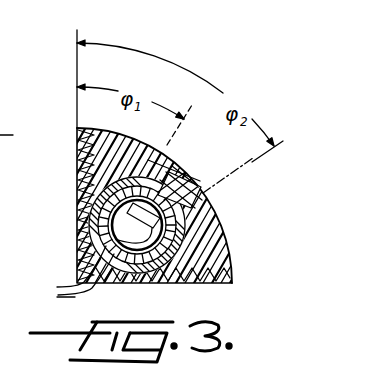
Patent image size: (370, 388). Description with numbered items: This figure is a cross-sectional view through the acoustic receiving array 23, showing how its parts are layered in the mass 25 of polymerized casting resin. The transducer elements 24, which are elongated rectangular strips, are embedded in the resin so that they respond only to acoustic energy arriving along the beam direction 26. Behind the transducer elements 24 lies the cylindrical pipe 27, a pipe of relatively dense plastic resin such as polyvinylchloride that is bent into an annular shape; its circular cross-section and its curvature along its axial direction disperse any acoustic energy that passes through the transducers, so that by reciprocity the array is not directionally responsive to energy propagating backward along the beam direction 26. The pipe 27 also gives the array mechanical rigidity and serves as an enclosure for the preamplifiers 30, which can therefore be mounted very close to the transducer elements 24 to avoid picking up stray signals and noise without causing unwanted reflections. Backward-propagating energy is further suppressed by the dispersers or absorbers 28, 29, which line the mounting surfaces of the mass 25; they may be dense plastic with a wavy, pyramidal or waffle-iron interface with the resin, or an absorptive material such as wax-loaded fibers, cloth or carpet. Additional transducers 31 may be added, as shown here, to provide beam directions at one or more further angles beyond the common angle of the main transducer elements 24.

The receiving array 23 is at (228, 208).
The transducer elements 24 is at (172, 160).
The mass of casting resin 25 is at (208, 251).
The beam direction 26 is at (190, 98).
The cylindrical pipe 27 is at (186, 226).
The disperser 28 is at (77, 186).
The disperser 29 is at (206, 285).
The preamplifiers 30 is at (138, 223).
The additional transducers 31 is at (218, 193).